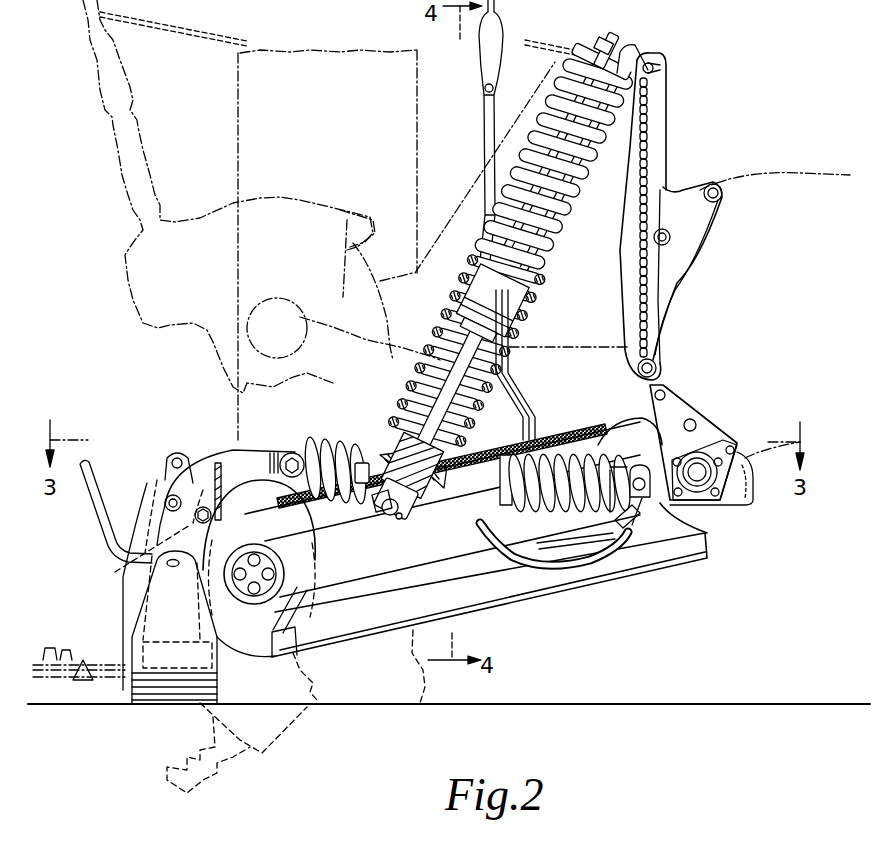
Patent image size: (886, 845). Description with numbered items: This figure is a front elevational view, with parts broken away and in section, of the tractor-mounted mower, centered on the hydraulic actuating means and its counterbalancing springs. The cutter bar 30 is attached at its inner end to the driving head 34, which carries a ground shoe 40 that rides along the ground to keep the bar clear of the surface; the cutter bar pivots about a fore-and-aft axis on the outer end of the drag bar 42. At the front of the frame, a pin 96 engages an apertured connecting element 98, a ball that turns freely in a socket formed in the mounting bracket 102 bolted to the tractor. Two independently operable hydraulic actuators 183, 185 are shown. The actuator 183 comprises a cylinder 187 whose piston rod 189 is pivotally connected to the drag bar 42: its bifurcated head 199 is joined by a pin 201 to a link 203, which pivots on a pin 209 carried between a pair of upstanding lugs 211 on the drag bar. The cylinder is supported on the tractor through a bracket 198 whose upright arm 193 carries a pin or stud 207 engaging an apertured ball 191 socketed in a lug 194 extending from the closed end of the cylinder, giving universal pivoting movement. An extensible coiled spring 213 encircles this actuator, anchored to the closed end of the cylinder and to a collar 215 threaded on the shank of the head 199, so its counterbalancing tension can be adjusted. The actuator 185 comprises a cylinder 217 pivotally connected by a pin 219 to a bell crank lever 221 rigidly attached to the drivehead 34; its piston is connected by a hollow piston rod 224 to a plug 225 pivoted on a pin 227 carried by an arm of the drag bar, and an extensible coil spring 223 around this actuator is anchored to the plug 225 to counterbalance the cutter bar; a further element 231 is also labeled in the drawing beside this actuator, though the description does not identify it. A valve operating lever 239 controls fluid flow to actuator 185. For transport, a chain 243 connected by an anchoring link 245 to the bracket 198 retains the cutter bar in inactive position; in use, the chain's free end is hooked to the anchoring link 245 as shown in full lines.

The cutter bar 30 is at (142, 94).
The driving head 34 is at (147, 522).
The ground shoe 40 is at (208, 622).
The drag bar 42 is at (462, 538).
The pin 96 is at (700, 478).
The apertured connecting element 98 is at (705, 462).
The mounting bracket 102 is at (680, 402).
The hydraulic actuator 183 is at (567, 253).
The hydraulic actuator 185 is at (507, 460).
The cylinder 187 is at (537, 293).
The piston rod 189 is at (408, 398).
The apertured ball 191 is at (634, 45).
The upright arm 193 is at (668, 84).
The lug 194 is at (610, 38).
The bracket 198 is at (678, 203).
The bifurcated head 199 is at (418, 500).
The pin 201 is at (443, 500).
The link 203 is at (380, 503).
The pin or stud 207 is at (598, 44).
The pin 209 is at (400, 520).
The upstanding lugs 211 is at (388, 514).
The extensible coiled spring 213 is at (588, 183).
The collar 215 is at (458, 457).
The cylinder 217 is at (362, 447).
The pin 219 is at (304, 458).
The bell crank lever 221 is at (232, 460).
The extensible coil spring 223 is at (303, 440).
The hollow piston rod 224 is at (444, 479).
The plug 225 is at (629, 477).
The pin 227 is at (645, 500).
The compression spring 231 is at (603, 450).
The valve operating lever 239 is at (540, 556).
The chain 243 is at (665, 130).
The anchoring link 245 is at (660, 62).